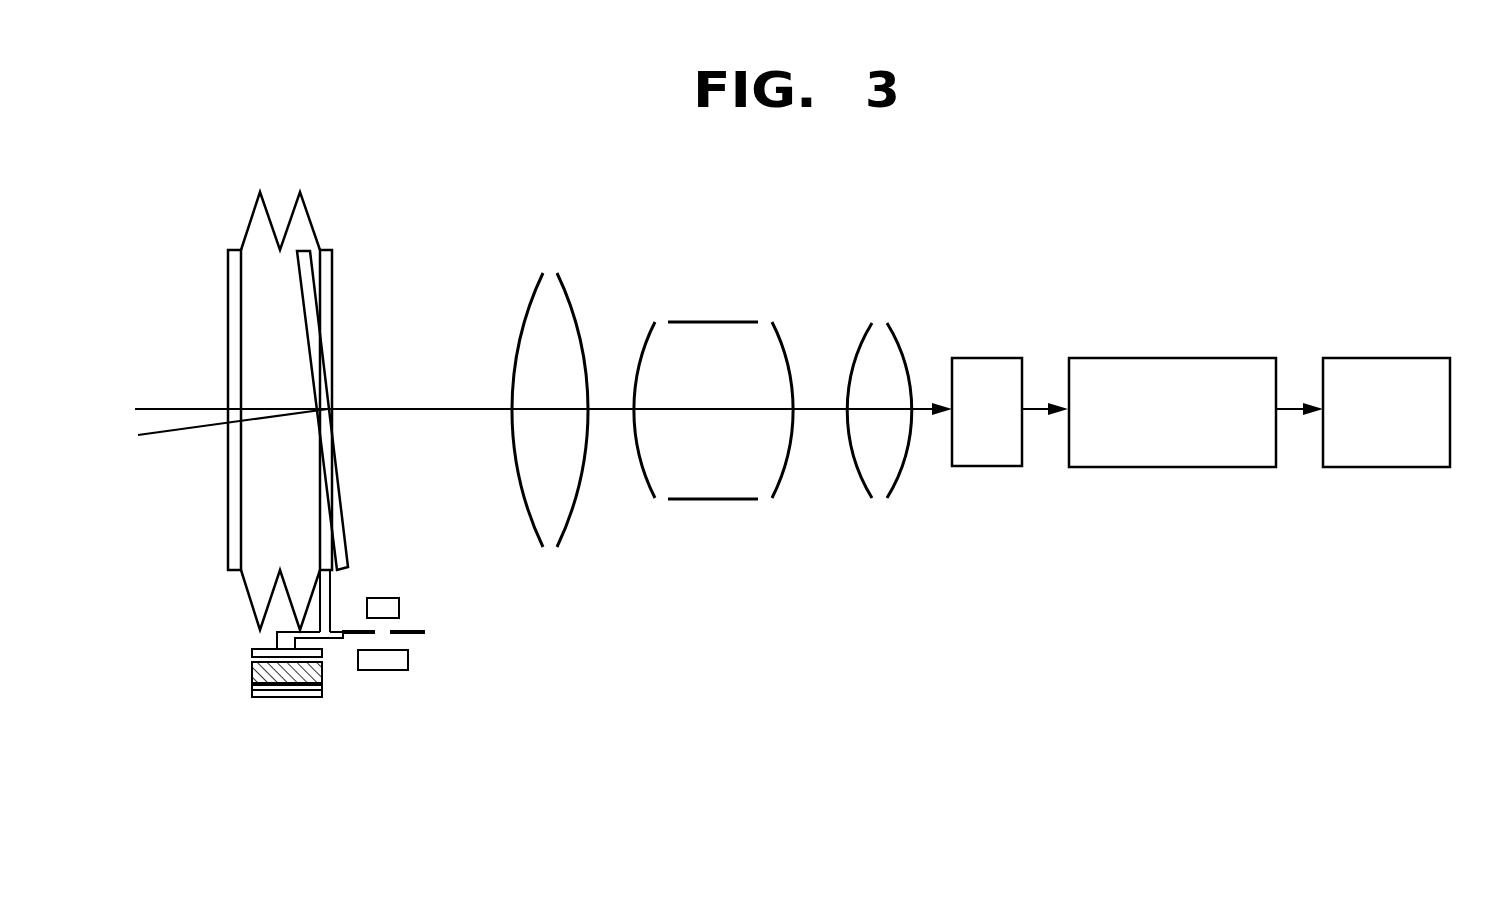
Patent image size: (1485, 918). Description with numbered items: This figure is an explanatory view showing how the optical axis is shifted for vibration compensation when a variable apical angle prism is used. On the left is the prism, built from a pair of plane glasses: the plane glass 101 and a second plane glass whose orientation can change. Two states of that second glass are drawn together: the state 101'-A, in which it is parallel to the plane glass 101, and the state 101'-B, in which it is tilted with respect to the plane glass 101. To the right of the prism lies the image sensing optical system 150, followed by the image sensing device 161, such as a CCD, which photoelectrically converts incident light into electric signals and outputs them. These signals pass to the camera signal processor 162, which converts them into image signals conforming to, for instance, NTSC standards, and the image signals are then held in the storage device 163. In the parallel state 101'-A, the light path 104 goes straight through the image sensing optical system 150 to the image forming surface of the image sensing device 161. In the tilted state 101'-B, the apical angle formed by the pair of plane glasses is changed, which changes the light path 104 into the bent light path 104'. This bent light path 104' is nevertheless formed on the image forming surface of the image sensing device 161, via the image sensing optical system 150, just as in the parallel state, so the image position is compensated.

The plane glass 101 is at (345, 407).
The parallel state of plane glass 101'-A is at (395, 410).
The tilted state of plane glass 101'-B is at (393, 410).
The light path 104 is at (538, 379).
The bent light path 104' is at (233, 454).
The image sensing optical system 150 is at (912, 555).
The image sensing device 161 is at (988, 357).
The camera signal processor 162 is at (1173, 357).
The storage device 163 is at (1390, 357).